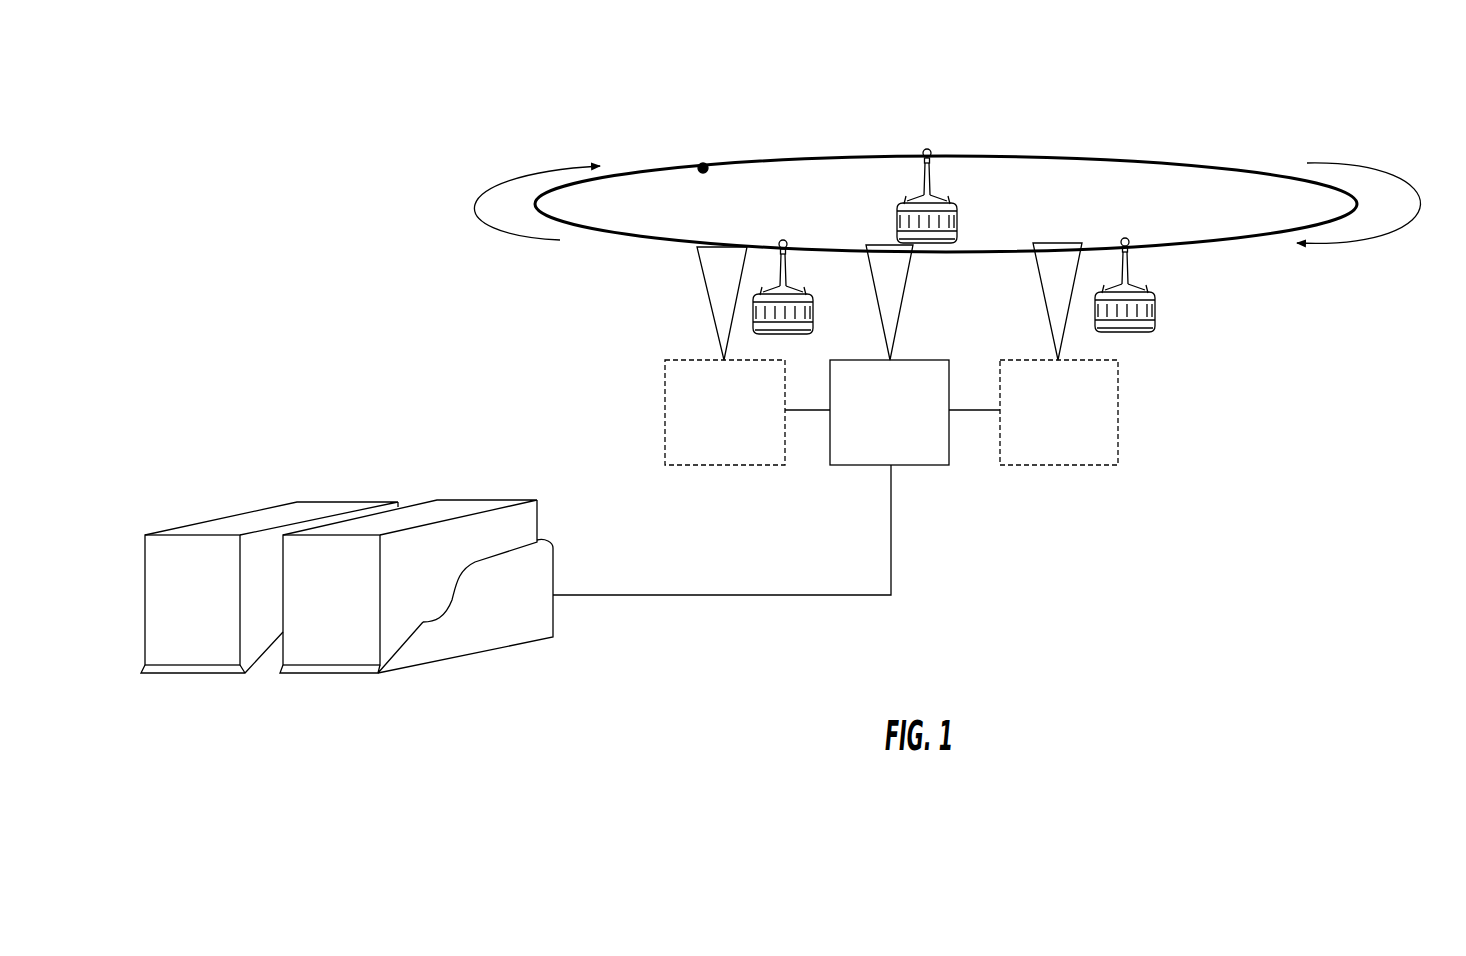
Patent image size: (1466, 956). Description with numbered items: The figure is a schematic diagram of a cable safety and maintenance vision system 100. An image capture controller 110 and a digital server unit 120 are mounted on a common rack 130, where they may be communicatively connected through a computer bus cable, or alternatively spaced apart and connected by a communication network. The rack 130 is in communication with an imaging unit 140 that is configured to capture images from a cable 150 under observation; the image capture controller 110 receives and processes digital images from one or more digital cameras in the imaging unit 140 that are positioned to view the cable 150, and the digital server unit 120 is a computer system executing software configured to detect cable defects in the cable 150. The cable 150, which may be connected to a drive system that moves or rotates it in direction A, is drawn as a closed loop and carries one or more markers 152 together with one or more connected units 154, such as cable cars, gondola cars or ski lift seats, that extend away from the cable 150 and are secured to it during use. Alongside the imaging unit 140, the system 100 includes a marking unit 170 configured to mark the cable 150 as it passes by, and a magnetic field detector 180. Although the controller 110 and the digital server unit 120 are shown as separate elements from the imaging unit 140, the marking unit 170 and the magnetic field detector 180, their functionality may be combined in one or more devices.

The system 100 is at (1155, 107).
The image capture controller 110 is at (200, 625).
The digital server unit 120 is at (340, 630).
The rack 130 is at (510, 625).
The imaging unit 140 is at (912, 452).
The cable 150 is at (1278, 173).
The marker 152 is at (713, 158).
The connected unit 154 is at (1162, 310).
The marking unit 170 is at (1087, 442).
The magnetic field detector 180 is at (753, 458).